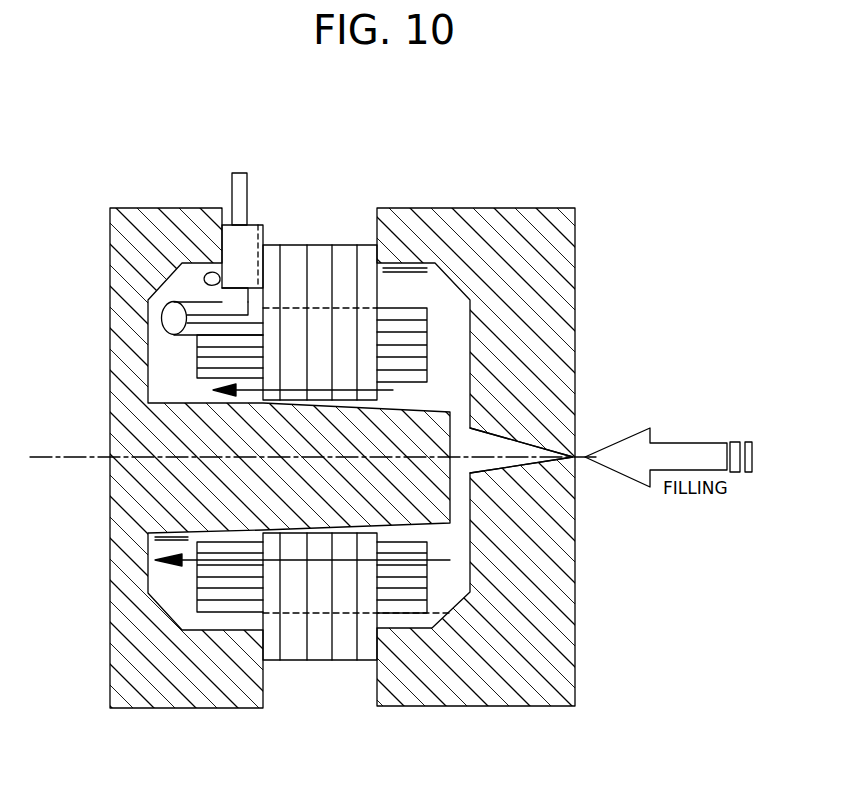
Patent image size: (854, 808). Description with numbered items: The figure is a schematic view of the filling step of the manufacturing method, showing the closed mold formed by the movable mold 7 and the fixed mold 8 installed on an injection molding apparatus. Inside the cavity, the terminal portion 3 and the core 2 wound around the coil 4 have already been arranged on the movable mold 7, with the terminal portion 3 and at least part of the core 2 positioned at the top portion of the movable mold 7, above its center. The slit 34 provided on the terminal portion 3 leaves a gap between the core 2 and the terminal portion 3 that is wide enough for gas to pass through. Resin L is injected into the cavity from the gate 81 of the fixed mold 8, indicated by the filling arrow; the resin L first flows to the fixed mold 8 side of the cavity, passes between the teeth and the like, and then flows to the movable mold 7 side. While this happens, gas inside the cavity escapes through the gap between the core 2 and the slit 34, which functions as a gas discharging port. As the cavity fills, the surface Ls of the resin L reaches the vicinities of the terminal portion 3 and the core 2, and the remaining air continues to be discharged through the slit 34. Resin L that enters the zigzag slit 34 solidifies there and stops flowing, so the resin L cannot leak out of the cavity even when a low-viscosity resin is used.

The movable mold 7 is at (157, 218).
The fixed mold 8 is at (528, 218).
The core 2 is at (344, 266).
The terminal portion 3 is at (252, 225).
The slit 34 is at (267, 236).
The coil 4 is at (203, 358).
The gate 81 is at (573, 457).
The resin L is at (448, 292).
The surface of the resin Ls is at (248, 307).